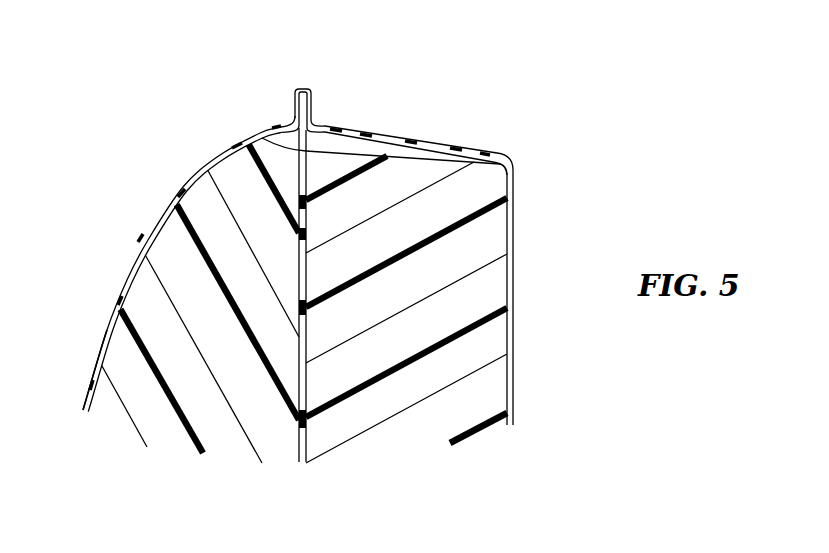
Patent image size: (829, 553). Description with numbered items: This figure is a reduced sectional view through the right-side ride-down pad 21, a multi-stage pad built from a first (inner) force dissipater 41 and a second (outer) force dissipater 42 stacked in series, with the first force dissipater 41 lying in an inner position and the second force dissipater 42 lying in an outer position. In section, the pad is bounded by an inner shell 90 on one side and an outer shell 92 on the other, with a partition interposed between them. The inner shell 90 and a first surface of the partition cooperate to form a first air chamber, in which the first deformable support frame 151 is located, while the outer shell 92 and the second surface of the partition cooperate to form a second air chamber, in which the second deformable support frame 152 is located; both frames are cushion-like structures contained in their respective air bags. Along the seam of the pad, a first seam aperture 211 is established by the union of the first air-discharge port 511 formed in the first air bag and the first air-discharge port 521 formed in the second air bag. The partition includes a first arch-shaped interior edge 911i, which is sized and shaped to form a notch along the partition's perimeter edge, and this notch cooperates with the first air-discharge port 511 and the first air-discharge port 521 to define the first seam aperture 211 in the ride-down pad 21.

The right-side ride-down pad 21 is at (338, 244).
The first seam aperture 211 is at (318, 106).
The first air-discharge port 521 is at (273, 128).
The first air-discharge port 511 is at (333, 130).
The first force dissipater 41 is at (416, 120).
The second force dissipater 42 is at (162, 253).
The inner shell 90 is at (520, 181).
The outer shell 92 is at (93, 357).
The first arch-shaped interior edge 911i is at (278, 141).
The first deformable support frame 151 is at (485, 276).
The second deformable support frame 152 is at (147, 290).